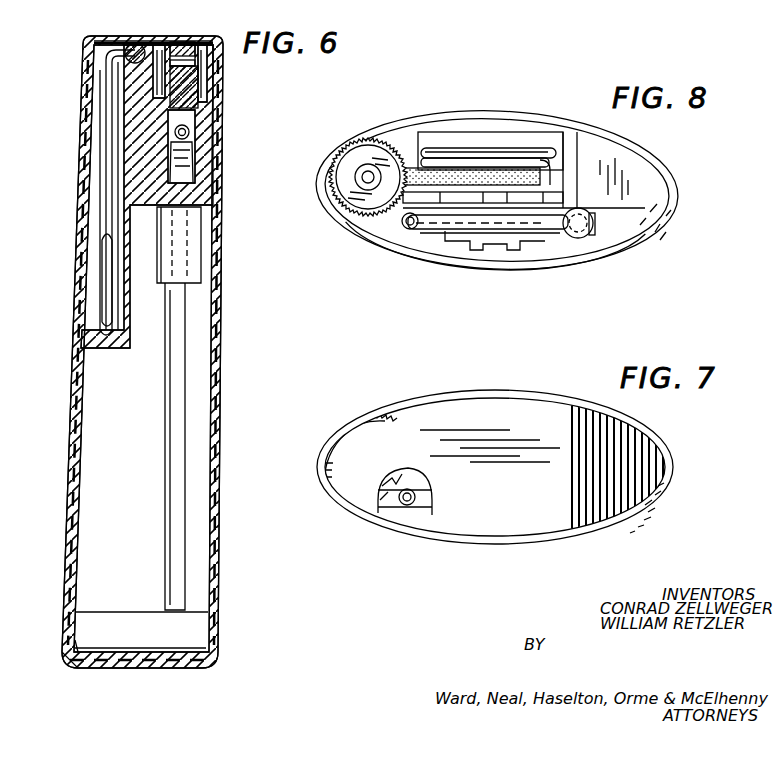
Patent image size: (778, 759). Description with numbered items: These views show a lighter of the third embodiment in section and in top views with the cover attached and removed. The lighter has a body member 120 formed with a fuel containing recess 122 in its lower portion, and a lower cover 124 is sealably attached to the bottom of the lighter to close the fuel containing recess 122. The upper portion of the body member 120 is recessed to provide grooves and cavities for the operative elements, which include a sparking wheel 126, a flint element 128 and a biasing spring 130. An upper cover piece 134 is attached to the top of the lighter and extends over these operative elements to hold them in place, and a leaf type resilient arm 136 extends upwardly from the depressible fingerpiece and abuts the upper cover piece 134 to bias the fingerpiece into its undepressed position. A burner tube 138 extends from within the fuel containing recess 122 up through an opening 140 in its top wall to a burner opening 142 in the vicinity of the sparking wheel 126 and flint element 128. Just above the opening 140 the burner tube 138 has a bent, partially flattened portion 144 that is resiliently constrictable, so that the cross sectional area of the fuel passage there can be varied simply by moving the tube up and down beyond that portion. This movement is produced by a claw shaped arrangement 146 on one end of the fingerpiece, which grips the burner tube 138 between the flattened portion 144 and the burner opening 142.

In FIG. 6, the body member 120 is at (213, 318).
In FIG. 7, the body member 120 is at (533, 395).
In FIG. 8, the body member 120 is at (640, 245).
In FIG. 6, the fuel containing recess 122 is at (140, 455).
In FIG. 6, the lower cover 124 is at (62, 655).
In FIG. 7, the sparking wheel 126 is at (350, 406).
In FIG. 8, the sparking wheel 126 is at (348, 124).
In FIG. 6, the flint element 128 is at (138, 43).
In FIG. 8, the flint element 128 is at (405, 168).
In FIG. 6, the biasing spring 130 is at (104, 117).
In FIG. 8, the biasing spring 130 is at (487, 155).
In FIG. 6, the upper cover piece 134 is at (165, 42).
In FIG. 7, the upper cover piece 134 is at (437, 405).
In FIG. 6, the leaf type resilient arm 136 is at (190, 42).
In FIG. 6, the burner tube 138 is at (163, 540).
In FIG. 7, the burner tube 138 is at (428, 512).
In FIG. 8, the burner tube 138 is at (452, 233).
In FIG. 6, the opening 140 is at (163, 290).
In FIG. 7, the burner opening 142 is at (402, 505).
In FIG. 8, the burner opening 142 is at (404, 228).
In FIG. 6, the bent, partially flattened portion 144 is at (190, 162).
In FIG. 8, the bent, partially flattened portion 144 is at (588, 238).
In FIG. 6, the claw shaped arrangement 146 is at (189, 134).